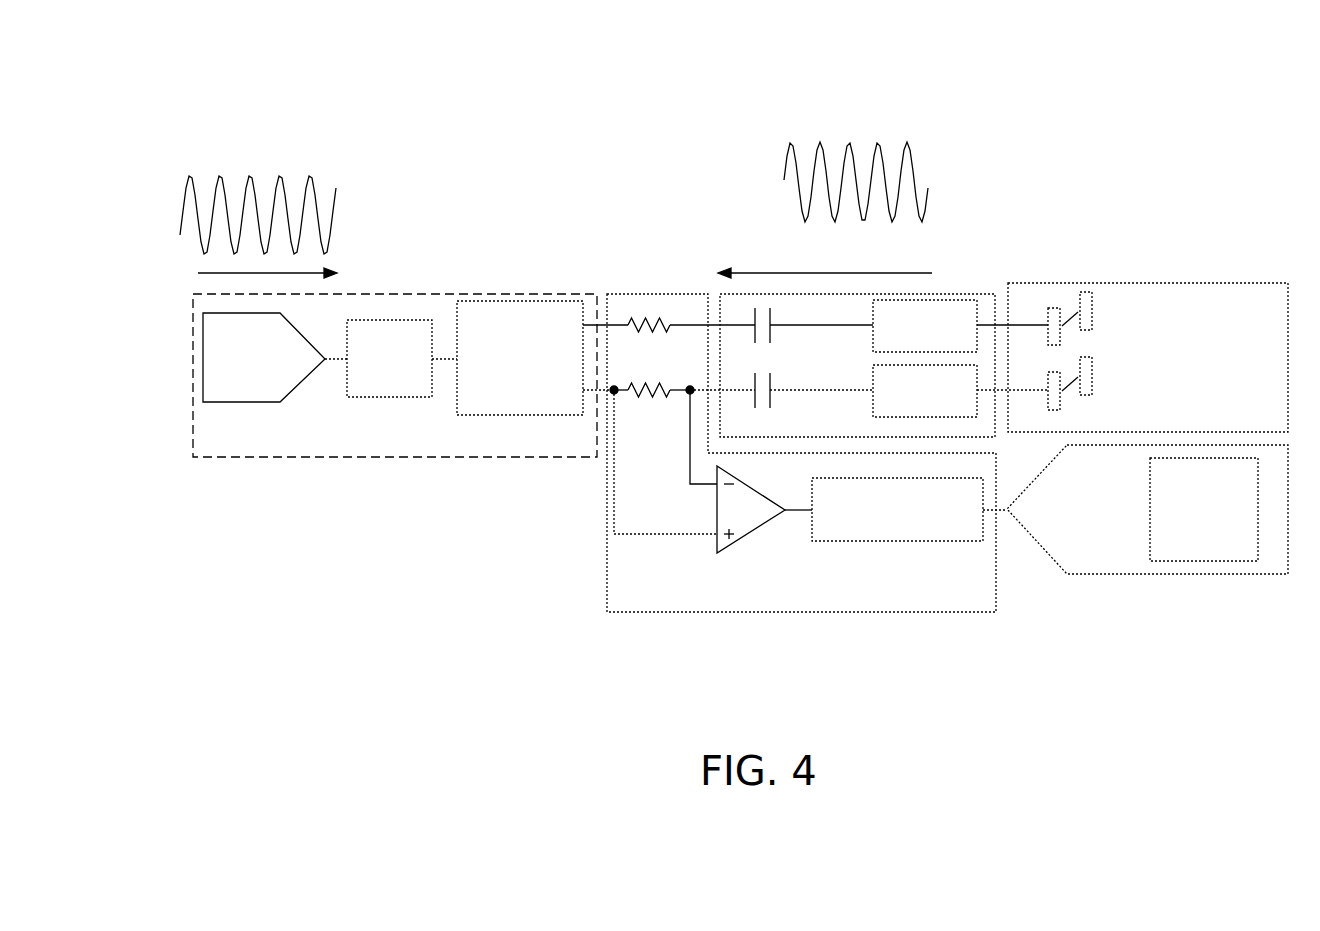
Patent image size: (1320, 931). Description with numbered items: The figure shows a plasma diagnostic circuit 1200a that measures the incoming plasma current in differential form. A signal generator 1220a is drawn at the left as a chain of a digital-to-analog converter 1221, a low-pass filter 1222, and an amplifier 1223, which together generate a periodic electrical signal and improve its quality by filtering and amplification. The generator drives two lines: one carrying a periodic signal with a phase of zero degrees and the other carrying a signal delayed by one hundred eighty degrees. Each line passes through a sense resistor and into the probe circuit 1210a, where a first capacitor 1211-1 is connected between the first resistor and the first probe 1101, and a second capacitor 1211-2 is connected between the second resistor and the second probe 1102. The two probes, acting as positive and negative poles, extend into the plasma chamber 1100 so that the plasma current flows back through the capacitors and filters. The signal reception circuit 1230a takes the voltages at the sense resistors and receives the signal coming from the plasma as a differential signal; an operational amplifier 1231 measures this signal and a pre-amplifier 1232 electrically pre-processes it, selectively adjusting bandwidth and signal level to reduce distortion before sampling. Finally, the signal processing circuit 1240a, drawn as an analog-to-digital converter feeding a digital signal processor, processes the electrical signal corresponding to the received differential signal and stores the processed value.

The plasma diagnostic circuit 1200a is at (480, 109).
The signal generator 1220a is at (447, 294).
The digital-to-analog converter (DAC) 1221 is at (245, 402).
The low-pass filter (LPF) 1222 is at (390, 397).
The amplifier (AMP) 1223 is at (520, 415).
The probe circuit 1210a is at (859, 339).
The first capacitor (C1) 1211-1 is at (877, 310).
The second capacitor (C2) 1211-2 is at (877, 375).
The plasma chamber 1100 is at (1148, 333).
The first probe 1101 is at (1148, 318).
The second probe 1102 is at (1148, 383).
The signal reception circuit 1230a is at (795, 483).
The operational amplifier 1231 is at (780, 488).
The pre-amplifier 1232 is at (923, 541).
The signal processing circuit 1240a is at (1175, 574).